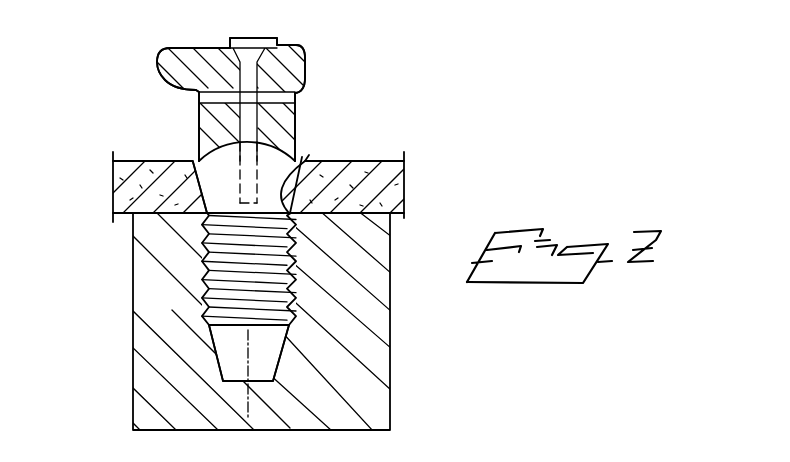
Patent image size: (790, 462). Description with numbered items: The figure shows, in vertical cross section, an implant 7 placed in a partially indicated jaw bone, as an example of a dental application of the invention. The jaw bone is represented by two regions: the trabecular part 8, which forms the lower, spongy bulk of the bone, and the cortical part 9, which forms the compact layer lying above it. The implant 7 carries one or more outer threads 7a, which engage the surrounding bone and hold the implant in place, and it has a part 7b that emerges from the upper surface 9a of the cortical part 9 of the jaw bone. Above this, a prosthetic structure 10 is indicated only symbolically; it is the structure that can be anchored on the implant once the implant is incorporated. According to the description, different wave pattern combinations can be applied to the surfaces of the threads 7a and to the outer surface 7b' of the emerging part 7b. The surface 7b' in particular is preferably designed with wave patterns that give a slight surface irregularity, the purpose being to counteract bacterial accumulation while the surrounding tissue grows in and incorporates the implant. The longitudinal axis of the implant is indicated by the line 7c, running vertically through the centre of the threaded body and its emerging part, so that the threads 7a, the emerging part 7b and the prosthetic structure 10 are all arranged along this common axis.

The implant 7 is at (302, 160).
The outer threads 7a is at (205, 313).
The emerging part 7b is at (217, 158).
The outer surface of the emerging part 7b' is at (143, 163).
The longitudinal axis 7c is at (248, 398).
The trabecular part 8 is at (152, 282).
The cortical part 9 is at (383, 177).
The upper surface 9a is at (373, 162).
The prosthetic structure 10 is at (313, 69).